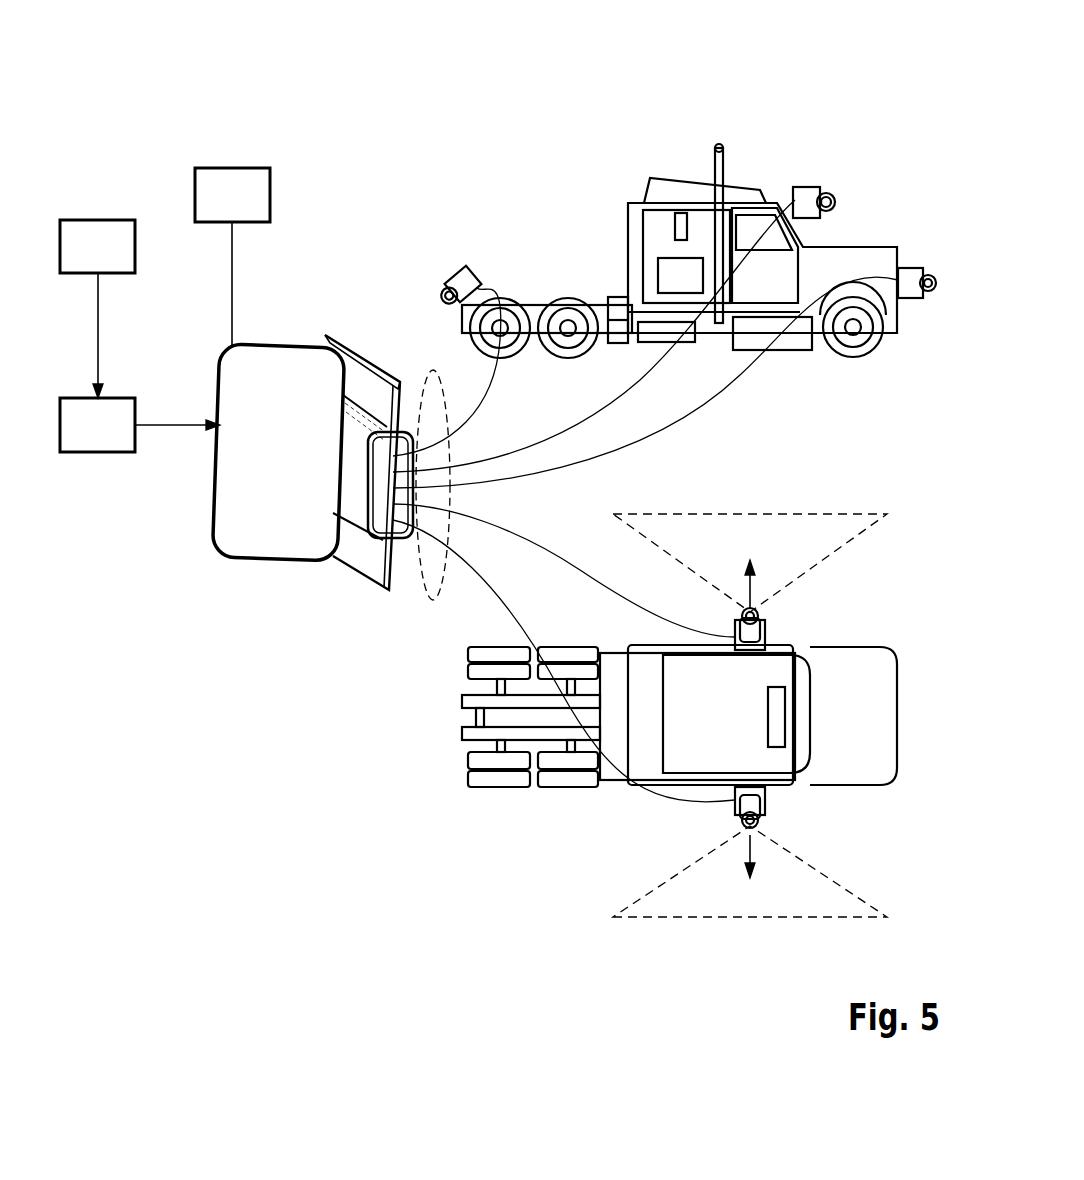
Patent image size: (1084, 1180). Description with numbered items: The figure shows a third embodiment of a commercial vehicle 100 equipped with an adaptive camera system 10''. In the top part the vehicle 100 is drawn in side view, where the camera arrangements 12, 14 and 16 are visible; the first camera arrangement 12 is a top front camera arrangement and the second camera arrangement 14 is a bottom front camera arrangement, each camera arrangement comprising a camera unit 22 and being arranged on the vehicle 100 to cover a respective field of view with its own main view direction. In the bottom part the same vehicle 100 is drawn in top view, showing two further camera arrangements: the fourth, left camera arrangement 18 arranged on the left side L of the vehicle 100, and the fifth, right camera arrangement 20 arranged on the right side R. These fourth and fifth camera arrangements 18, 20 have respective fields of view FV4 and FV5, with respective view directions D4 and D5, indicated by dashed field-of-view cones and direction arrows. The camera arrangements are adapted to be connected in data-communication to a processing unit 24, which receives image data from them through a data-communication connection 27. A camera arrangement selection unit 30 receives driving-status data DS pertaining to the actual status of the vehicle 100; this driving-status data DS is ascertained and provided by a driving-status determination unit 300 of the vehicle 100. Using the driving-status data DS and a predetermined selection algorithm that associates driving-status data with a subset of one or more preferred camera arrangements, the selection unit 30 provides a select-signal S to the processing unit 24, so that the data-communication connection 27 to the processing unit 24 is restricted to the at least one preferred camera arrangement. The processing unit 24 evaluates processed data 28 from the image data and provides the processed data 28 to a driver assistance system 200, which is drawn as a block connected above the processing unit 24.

The adaptive camera system 10'' is at (495, 464).
The commercial vehicle 100 is at (665, 145).
The first camera arrangement 12 is at (838, 168).
The second camera arrangement 14 is at (920, 248).
The camera arrangement 16 is at (485, 250).
The left camera arrangement 18 is at (784, 614).
The right camera arrangement 20 is at (784, 826).
The camera unit 22 is at (806, 188).
The processing unit 24 is at (250, 563).
The data-communication connection 27 is at (418, 615).
The processed data 28 is at (252, 268).
The camera arrangement selection unit 30 is at (98, 452).
The driver assistance system 200 is at (232, 168).
The driving-status determination unit 300 is at (98, 220).
The driving-status data DS is at (100, 308).
The select-signal S is at (165, 430).
The view direction D4 is at (750, 566).
The view direction D5 is at (749, 872).
The field of view FV4 is at (636, 536).
The field of view FV5 is at (638, 896).
The left side L is at (892, 630).
The right side R is at (893, 808).